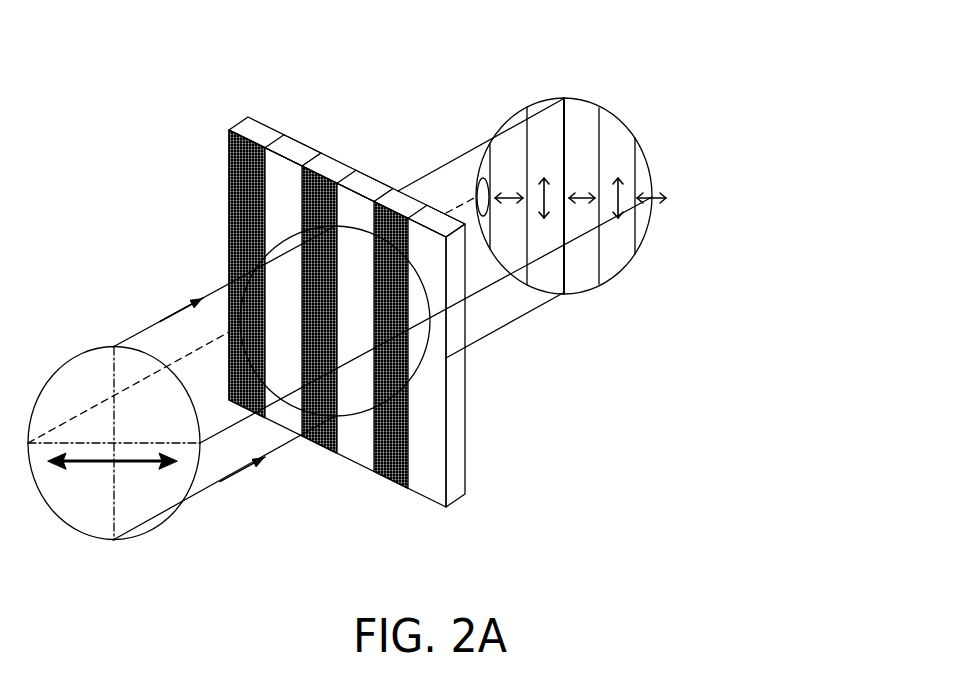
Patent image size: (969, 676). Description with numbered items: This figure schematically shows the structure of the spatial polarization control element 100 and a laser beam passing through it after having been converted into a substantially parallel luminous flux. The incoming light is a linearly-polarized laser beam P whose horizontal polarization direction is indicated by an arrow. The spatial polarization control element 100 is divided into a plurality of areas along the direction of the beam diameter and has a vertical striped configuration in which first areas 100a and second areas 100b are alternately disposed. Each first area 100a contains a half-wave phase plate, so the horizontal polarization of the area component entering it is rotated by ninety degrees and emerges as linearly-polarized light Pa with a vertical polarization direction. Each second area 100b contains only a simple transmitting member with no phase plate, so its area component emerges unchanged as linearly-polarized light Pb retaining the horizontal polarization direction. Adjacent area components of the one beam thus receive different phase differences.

The spatial polarization control element 100 is at (225, 128).
The first area 100a is at (320, 190).
The second area 100b is at (352, 210).
The linearly-polarized laser beam P is at (135, 472).
The linearly-polarized light having a vertical polarization direction Pa is at (548, 228).
The linearly-polarized light having the horizontal polarization direction Pb is at (577, 213).